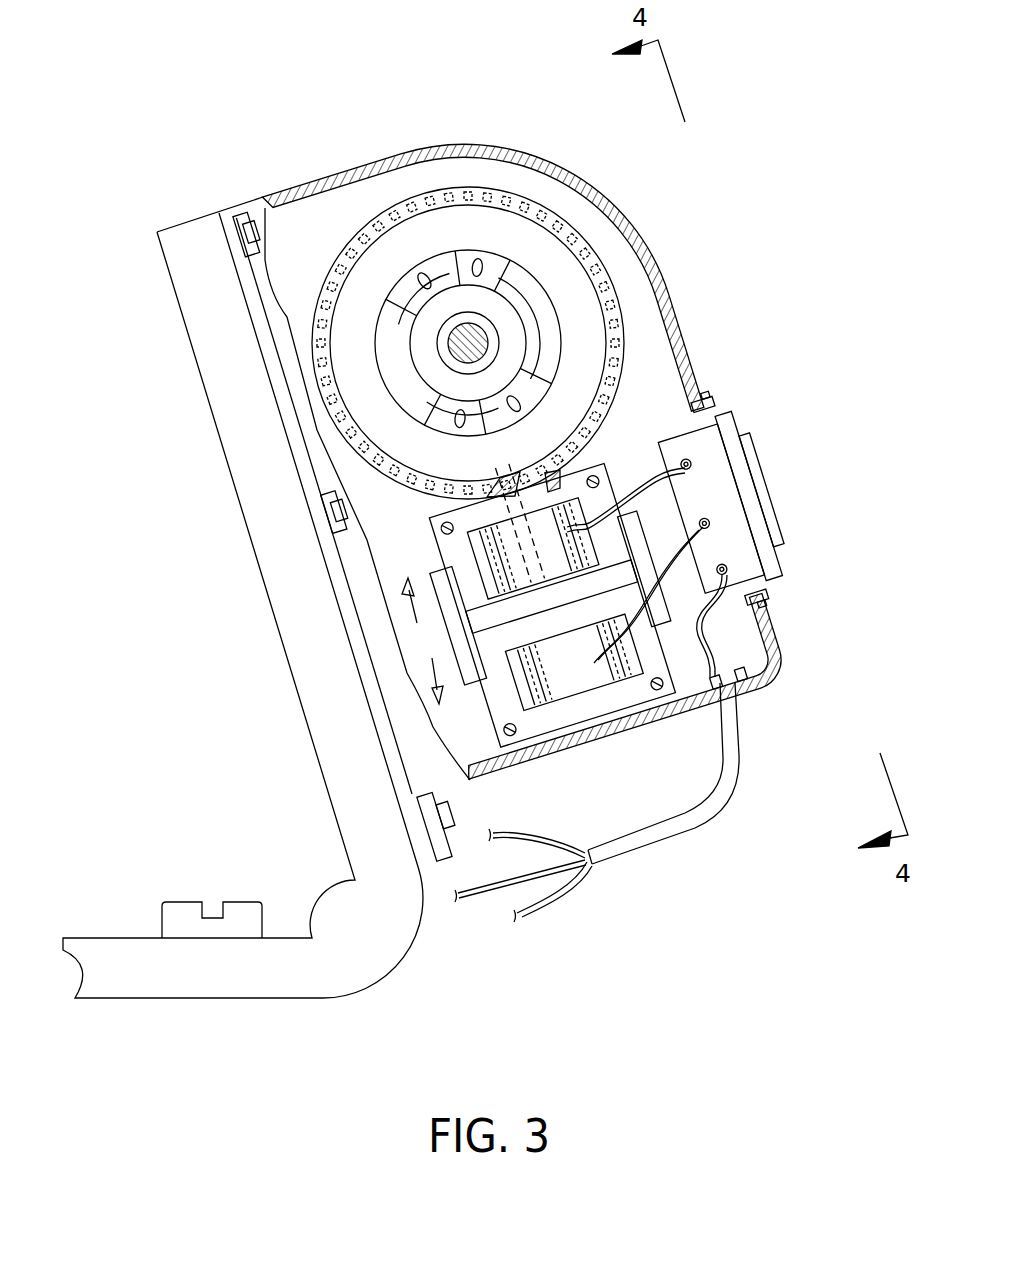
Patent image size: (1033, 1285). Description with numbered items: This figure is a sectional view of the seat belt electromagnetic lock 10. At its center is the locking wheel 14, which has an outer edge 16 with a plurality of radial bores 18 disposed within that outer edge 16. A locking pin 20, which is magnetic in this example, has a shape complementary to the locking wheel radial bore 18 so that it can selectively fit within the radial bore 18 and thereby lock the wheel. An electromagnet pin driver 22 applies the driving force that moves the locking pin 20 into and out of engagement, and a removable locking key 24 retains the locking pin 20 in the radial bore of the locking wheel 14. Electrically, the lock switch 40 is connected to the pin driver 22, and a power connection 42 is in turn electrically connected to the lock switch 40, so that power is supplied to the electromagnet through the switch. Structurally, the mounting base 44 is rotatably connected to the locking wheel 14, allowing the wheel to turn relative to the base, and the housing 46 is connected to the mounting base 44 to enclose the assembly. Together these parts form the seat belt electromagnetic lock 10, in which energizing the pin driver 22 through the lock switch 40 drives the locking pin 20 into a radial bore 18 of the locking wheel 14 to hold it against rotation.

The seat belt electromagnetic lock 10 is at (398, 106).
The locking wheel 14 is at (547, 263).
The outer edge 16 is at (607, 266).
The radial bore 18 is at (538, 472).
The locking pin 20 is at (433, 515).
The electromagnet pin driver 22 is at (497, 554).
The removable locking key 24 is at (640, 557).
The lock switch 40 is at (733, 450).
The power connection 42 is at (735, 745).
The mounting base 44 is at (287, 978).
The housing 46 is at (478, 143).